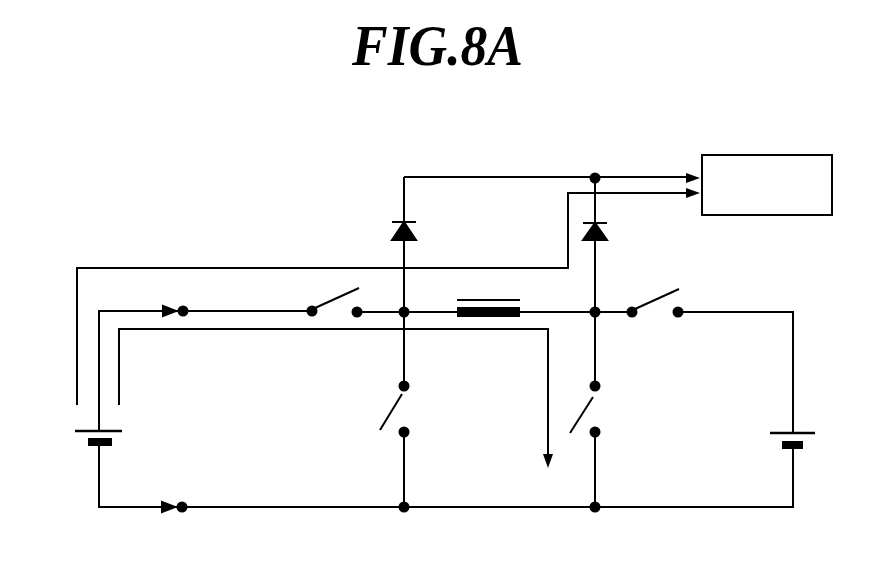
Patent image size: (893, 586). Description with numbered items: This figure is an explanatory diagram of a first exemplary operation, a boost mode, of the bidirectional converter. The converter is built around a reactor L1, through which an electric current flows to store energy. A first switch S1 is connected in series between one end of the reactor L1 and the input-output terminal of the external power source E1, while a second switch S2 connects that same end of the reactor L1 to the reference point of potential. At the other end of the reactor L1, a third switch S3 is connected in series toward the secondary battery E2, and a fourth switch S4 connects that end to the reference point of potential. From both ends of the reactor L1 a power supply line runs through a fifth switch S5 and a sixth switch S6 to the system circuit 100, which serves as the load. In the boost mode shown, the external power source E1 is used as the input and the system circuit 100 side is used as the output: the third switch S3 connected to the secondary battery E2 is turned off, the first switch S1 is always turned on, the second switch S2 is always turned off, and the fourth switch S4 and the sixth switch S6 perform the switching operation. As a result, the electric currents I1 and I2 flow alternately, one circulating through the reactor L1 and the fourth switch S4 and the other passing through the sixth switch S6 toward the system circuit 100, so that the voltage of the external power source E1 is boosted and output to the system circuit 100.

The system circuit 100 is at (766, 155).
The first switch S1 is at (317, 296).
The second switch S2 is at (378, 409).
The third switch S3 is at (653, 297).
The fourth switch S4 is at (603, 409).
The fifth switch S5 is at (385, 233).
The sixth switch S6 is at (614, 234).
The reactor L1 is at (472, 295).
The external power source E1 is at (87, 447).
The secondary battery E2 is at (801, 423).
The electric current I1 is at (534, 428).
The electric current I2 is at (616, 197).